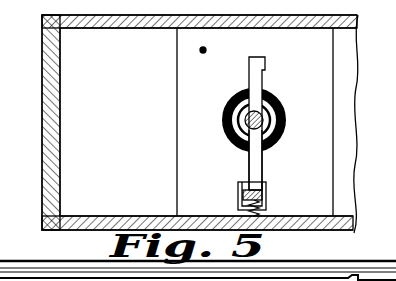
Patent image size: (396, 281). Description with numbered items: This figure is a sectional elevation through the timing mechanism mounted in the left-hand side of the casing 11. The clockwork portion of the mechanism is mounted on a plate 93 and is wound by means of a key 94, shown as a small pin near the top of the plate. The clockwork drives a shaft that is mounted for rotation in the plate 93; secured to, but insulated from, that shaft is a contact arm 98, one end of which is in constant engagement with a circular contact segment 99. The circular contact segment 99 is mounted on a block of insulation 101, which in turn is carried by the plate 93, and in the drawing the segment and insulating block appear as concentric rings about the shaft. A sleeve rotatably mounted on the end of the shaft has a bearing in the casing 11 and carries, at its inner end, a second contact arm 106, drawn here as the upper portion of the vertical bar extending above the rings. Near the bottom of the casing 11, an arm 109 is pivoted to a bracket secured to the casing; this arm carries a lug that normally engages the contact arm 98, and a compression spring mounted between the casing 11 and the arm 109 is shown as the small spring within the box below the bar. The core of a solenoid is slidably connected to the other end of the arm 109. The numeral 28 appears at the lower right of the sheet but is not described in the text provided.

The casing 11 is at (62, 200).
The plate 93 is at (176, 104).
The key 94 is at (199, 51).
The circular contact segment 99 is at (274, 104).
The block of insulation 101 is at (230, 126).
The contact arm 106 is at (254, 74).
The contact arm 98 is at (248, 163).
The arm 109 is at (266, 192).
The base plate 28 is at (393, 276).